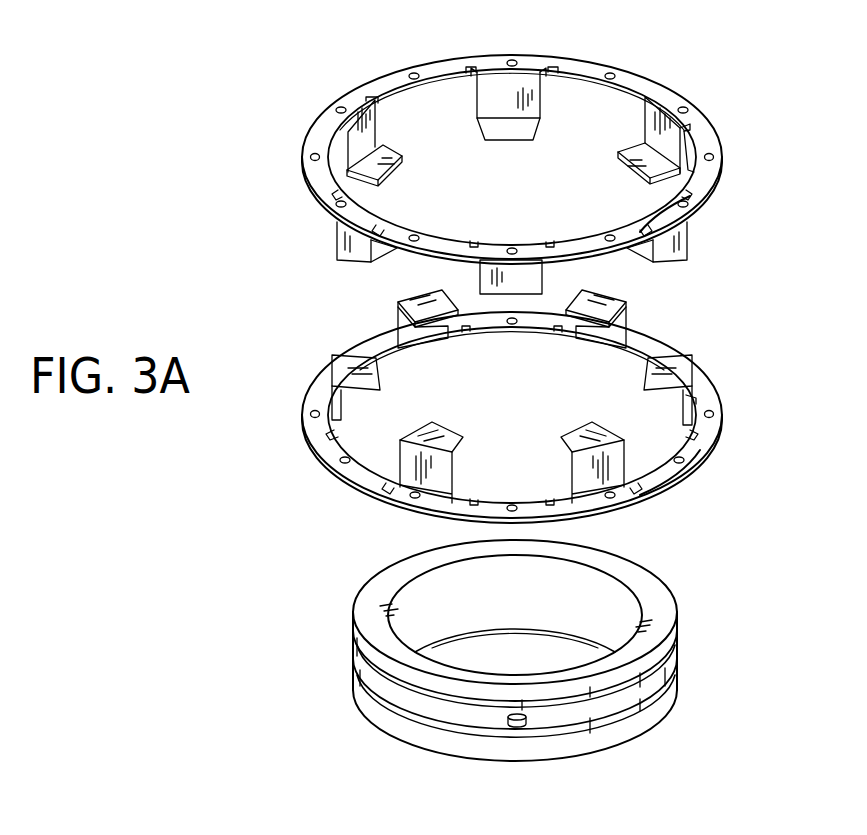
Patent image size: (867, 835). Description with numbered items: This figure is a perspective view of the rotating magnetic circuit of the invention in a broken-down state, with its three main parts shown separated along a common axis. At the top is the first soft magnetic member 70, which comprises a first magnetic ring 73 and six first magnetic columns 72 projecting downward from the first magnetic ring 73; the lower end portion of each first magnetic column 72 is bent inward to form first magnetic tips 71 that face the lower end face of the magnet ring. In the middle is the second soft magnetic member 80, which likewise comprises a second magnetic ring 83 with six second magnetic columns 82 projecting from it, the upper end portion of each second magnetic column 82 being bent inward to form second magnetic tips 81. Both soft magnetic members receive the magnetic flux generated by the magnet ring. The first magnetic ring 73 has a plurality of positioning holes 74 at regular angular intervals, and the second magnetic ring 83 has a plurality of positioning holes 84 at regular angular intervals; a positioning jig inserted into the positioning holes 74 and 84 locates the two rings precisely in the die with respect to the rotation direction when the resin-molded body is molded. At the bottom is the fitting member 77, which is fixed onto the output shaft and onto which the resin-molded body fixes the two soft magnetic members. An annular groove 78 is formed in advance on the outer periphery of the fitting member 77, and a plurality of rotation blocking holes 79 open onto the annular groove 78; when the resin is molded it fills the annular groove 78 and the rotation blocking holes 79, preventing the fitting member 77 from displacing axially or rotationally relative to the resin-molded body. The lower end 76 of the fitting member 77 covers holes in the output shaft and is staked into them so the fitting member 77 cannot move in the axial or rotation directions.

The first soft magnetic member 70 is at (326, 101).
The first magnetic tips 71 is at (627, 150).
The first magnetic columns 72 is at (670, 127).
The first magnetic ring 73 is at (698, 177).
The positioning holes 74 is at (677, 205).
The lower end 76 is at (580, 750).
The fitting member 77 is at (346, 609).
The annular groove 78 is at (673, 688).
The rotation blocking holes 79 is at (517, 724).
The second soft magnetic member 80 is at (320, 356).
The second magnetic tips 81 is at (673, 353).
The second magnetic columns 82 is at (697, 398).
The second magnetic ring 83 is at (688, 452).
The positioning holes 84 is at (685, 468).